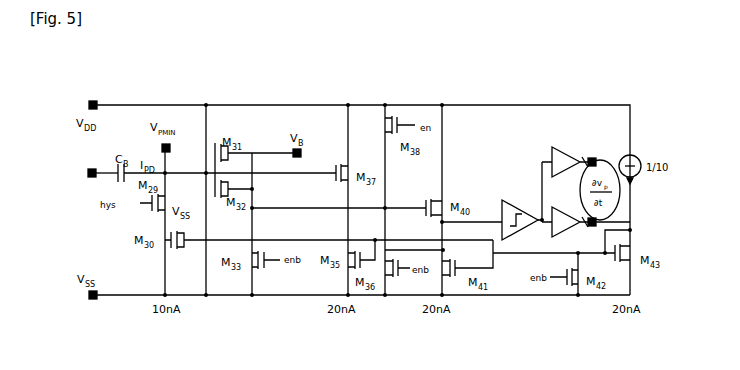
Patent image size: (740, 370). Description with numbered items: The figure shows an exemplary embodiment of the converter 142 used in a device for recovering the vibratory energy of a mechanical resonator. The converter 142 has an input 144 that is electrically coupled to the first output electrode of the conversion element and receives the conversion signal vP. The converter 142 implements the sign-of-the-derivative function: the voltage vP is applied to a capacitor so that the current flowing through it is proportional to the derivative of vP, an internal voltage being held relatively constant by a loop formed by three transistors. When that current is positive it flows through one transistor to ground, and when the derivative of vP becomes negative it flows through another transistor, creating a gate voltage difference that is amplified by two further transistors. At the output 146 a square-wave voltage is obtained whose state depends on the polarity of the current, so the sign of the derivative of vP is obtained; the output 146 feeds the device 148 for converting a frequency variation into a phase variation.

The converter 142 is at (611, 92).
The input 144 is at (96, 182).
The output 146 is at (602, 152).
The device for converting a frequency variation into a phase variation 148 is at (598, 223).